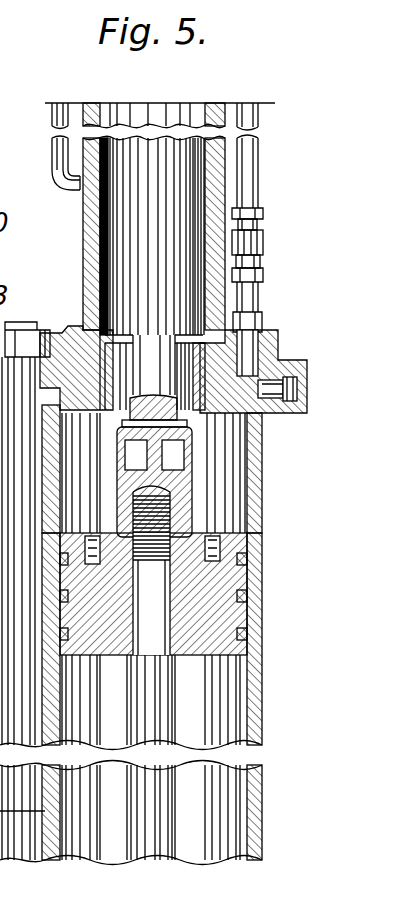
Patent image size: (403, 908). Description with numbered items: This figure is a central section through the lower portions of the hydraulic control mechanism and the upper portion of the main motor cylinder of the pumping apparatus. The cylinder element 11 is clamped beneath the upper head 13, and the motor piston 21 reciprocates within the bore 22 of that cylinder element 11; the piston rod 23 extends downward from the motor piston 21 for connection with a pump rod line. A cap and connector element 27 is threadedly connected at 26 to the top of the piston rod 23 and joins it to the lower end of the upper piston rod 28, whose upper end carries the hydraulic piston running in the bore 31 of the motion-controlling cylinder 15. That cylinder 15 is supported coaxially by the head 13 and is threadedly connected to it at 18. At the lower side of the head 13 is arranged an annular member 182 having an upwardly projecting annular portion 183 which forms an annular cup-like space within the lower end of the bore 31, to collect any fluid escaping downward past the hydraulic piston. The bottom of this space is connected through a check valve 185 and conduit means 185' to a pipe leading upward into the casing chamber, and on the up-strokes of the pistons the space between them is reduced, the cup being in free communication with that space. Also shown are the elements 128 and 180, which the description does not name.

The pipe elbow 128 is at (60, 155).
The piston rod 28 is at (140, 204).
The bore 31 is at (100, 238).
The threaded connection 18 is at (76, 325).
The upper head 13 is at (57, 332).
The motion-controlling cylinder 15 is at (227, 172).
The conduit means 185' is at (272, 199).
The check valve 185 is at (268, 250).
The upwardly projecting annular portion 183 is at (262, 316).
The screw 180 is at (262, 335).
The annular member 182 is at (205, 415).
The cap and connector element 27 is at (185, 488).
The threaded connection 26 is at (170, 533).
The motor piston 21 is at (228, 585).
The cylinder element 11 is at (262, 653).
The bore 22 is at (240, 693).
The piston rod 23 is at (140, 820).